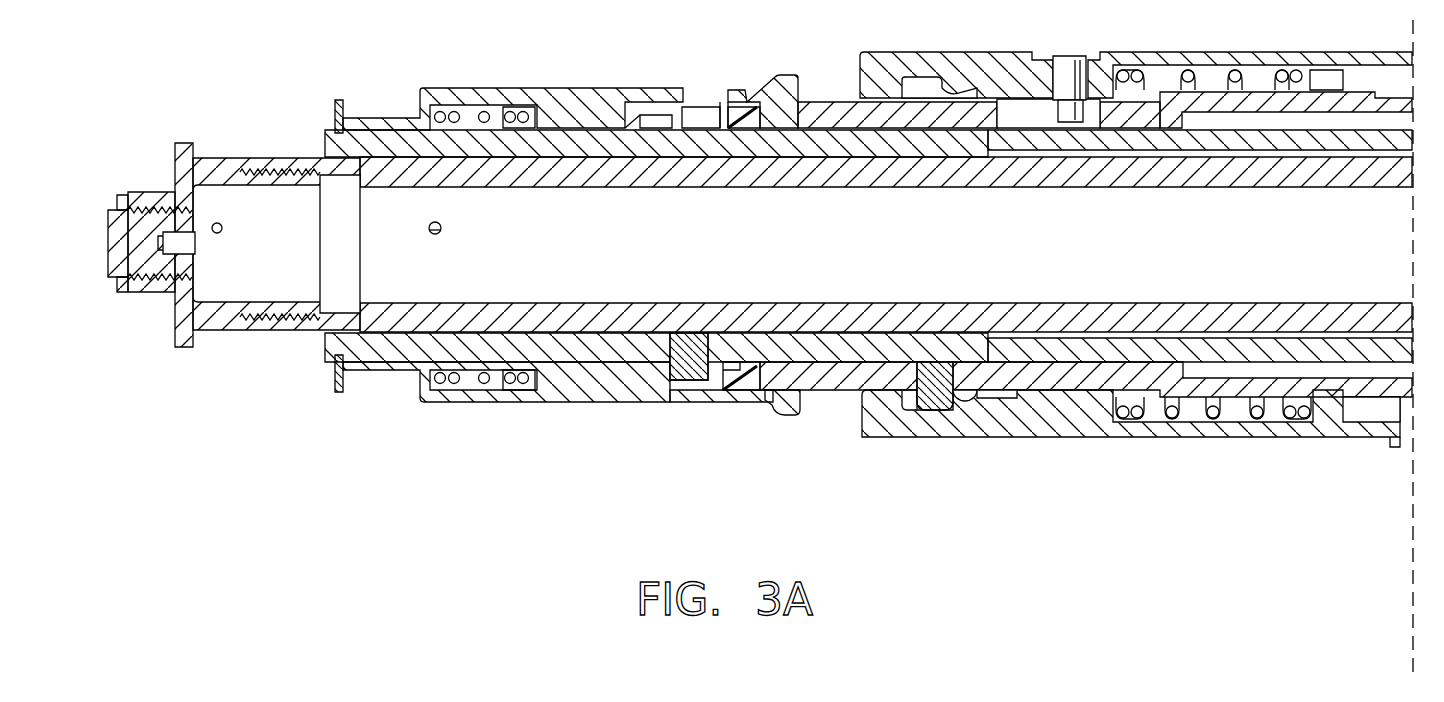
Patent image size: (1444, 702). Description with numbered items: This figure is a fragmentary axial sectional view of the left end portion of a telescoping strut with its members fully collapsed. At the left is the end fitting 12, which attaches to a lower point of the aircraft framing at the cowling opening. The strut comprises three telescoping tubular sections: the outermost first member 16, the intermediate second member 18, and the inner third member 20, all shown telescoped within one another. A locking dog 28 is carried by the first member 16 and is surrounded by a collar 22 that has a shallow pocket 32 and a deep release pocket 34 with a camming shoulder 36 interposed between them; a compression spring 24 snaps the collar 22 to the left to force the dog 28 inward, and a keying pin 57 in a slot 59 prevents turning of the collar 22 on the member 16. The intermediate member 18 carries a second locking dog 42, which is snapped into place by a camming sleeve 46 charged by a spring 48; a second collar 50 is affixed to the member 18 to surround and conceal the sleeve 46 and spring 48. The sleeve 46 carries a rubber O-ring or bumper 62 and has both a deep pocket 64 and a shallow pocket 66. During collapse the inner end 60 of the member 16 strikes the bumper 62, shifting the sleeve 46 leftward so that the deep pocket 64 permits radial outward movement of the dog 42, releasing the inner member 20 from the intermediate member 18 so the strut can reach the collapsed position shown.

The end fitting 12 is at (133, 248).
The inner telescoping member 20 is at (265, 162).
The outermost telescoping member 16 is at (833, 108).
The intermediate telescoping member 18 is at (493, 140).
The collar 22 is at (977, 64).
The compression spring 24 is at (1192, 66).
The locking dog 28 is at (940, 398).
The shallow pocket 32 is at (1002, 398).
The deep release pocket 34 is at (908, 405).
The camming shoulder 36 is at (968, 400).
The locking dog 42 is at (692, 353).
The camming sleeve 46 is at (583, 373).
The spring 48 is at (477, 405).
The second collar 50 is at (468, 90).
The keying pin 57 is at (1066, 62).
The slot 59 is at (1018, 110).
The inner end 60 is at (774, 114).
The rubber O-ring or bumper 62 is at (730, 112).
The deep pocket 64 is at (653, 120).
The shallow pocket 66 is at (680, 110).